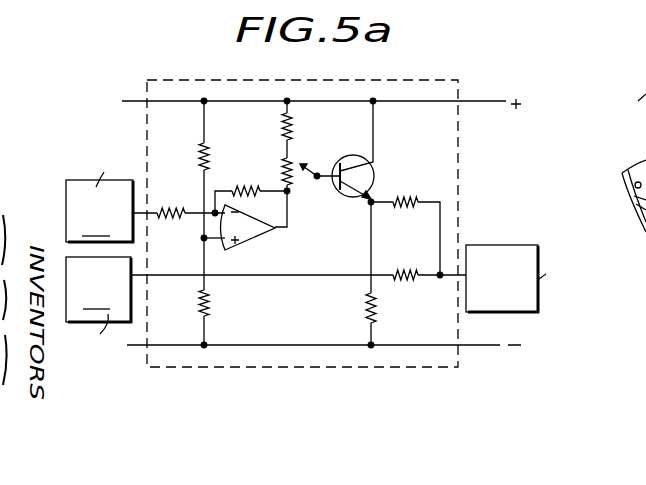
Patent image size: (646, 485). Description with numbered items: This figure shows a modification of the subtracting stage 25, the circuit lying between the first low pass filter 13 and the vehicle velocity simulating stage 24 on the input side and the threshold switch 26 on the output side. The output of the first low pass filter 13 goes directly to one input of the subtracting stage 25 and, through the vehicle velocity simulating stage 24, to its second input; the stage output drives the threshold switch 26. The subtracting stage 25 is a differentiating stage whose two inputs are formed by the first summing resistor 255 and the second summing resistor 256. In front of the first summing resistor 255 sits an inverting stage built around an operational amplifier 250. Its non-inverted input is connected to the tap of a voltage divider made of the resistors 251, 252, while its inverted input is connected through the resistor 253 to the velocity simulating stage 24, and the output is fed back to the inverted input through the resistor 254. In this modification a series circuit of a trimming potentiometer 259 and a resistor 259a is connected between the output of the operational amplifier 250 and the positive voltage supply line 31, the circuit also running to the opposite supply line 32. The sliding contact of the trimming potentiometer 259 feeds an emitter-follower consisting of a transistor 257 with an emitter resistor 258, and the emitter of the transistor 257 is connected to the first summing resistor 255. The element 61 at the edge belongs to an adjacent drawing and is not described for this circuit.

The first low pass filter 13 is at (92, 328).
The vehicle velocity simulating stage 24 is at (72, 173).
The subtracting stage 25 is at (340, 366).
The threshold switch 26 is at (500, 246).
The positive supply line 31 is at (488, 101).
The negative supply line 32 is at (478, 346).
The operational amplifier 250 is at (256, 238).
The resistor 251 is at (207, 302).
The resistor 252 is at (201, 150).
The resistor 253 is at (166, 219).
The resistor 254 is at (245, 188).
The first summing resistor 255 is at (410, 206).
The second summing resistor 256 is at (418, 280).
The transistor 257 is at (376, 175).
The emitter resistor 258 is at (367, 300).
The trimming potentiometer 259 is at (306, 179).
The resistor 259a is at (291, 124).
The sensor element 61 is at (630, 216).